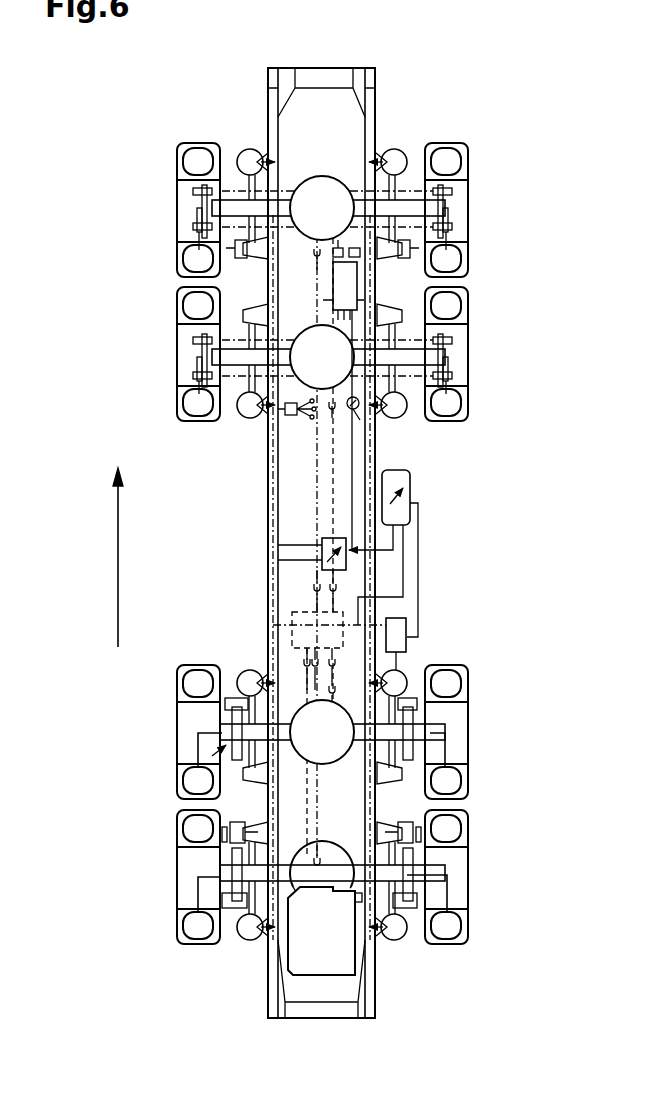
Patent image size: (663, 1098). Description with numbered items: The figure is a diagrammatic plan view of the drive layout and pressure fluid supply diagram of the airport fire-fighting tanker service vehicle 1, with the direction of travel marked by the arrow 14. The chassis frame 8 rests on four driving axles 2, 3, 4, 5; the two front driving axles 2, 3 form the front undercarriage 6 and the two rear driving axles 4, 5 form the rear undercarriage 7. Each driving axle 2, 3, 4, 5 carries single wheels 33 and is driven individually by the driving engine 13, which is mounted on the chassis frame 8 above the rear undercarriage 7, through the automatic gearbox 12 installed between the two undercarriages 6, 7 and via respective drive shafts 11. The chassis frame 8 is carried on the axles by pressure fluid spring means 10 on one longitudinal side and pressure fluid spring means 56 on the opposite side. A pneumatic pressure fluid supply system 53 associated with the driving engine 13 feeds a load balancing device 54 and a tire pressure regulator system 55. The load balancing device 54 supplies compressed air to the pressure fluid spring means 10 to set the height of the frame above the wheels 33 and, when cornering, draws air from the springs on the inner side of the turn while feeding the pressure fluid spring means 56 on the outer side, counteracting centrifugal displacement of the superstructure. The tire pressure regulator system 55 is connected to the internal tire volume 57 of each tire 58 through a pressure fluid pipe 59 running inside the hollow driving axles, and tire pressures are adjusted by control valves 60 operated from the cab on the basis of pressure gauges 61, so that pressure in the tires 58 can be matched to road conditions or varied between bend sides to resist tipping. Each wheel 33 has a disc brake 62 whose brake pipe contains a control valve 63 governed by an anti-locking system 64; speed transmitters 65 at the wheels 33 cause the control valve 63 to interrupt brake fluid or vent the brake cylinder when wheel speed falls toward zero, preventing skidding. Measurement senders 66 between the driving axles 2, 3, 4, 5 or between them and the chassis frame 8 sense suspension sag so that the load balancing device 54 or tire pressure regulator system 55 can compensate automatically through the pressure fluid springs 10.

The airport fire-fighting tanker service vehicle 1 is at (519, 110).
The front driving axle 2 is at (404, 194).
The driving axle 3 is at (409, 374).
The driving axle 4 is at (226, 748).
The driving axle 5 is at (277, 940).
The front undercarriage 6 is at (559, 242).
The rear undercarriage 7 is at (544, 773).
The chassis frame 8 is at (356, 83).
The pressure fluid spring means 10 is at (247, 150).
The drive shafts 11 is at (313, 582).
The automatic gearbox 12 is at (330, 621).
The driving engine 13 is at (333, 958).
The direction of travel 14 is at (115, 588).
The wheels 33 is at (176, 205).
The pneumatic pressure fluid supply system 53 is at (382, 499).
The load balancing device 54 is at (408, 612).
The tire pressure regulator system 55 is at (322, 561).
The pressure fluid spring means 56 is at (396, 150).
The internal tire volume 57 is at (195, 307).
The tire 58 is at (182, 148).
The pressure fluid pipe 59 is at (418, 728).
The control valves 60 is at (287, 418).
The pressure gauges 61 is at (360, 416).
The disc brakes 62 is at (443, 203).
The control valves 63 is at (332, 240).
The anti-locking system 64 is at (359, 287).
The speed transmitters 65 is at (448, 190).
The measurement senders 66 is at (200, 252).